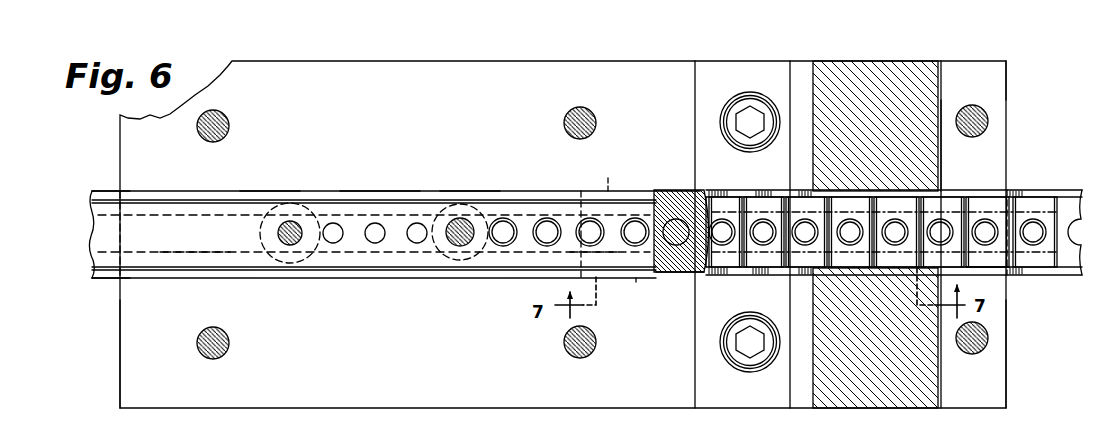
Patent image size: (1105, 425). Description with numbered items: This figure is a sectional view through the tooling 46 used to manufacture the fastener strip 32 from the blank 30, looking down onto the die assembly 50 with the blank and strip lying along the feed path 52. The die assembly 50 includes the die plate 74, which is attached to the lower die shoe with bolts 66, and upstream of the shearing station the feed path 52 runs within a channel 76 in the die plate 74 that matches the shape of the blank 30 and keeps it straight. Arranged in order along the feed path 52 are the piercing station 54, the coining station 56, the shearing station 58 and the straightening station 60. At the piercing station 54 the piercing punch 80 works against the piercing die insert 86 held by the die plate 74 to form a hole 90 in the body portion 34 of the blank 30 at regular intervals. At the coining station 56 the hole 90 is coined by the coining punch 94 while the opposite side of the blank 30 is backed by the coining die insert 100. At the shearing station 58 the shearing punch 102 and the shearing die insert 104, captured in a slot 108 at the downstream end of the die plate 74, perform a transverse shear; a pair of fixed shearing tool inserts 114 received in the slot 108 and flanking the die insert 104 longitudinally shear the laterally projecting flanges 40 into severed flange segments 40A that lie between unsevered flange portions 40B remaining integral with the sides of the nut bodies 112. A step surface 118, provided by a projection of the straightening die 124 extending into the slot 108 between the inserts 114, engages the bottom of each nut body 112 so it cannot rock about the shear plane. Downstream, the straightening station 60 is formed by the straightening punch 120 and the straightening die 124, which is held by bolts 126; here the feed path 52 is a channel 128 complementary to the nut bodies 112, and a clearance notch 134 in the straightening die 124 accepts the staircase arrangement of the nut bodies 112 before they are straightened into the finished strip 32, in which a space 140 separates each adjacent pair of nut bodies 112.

The blank 30 is at (84, 212).
The fastener strip 32 is at (1050, 165).
The body portion 34 is at (96, 239).
The laterally projecting flanges 40 is at (100, 190).
The severed flange segments 40A is at (752, 191).
The unsevered flange portions 40B is at (772, 191).
The tooling 46 is at (1045, 63).
The die assembly 50 is at (500, 61).
The feed path 52 is at (381, 192).
The piercing station 54 is at (263, 178).
The coining station 56 is at (474, 178).
The shearing station 58 is at (666, 156).
The straightening station 60 is at (990, 148).
The bolts 66 is at (222, 114).
The die plate 74 is at (120, 383).
The channel 76 is at (196, 249).
The piercing punch 80 is at (289, 222).
The piercing die insert 86 is at (295, 260).
The hole 90 is at (334, 243).
The coining punch 94 is at (458, 219).
The coining die insert 100 is at (455, 261).
The shearing punch 102 is at (661, 195).
The shearing die insert 104 is at (586, 257).
The slot 108 is at (584, 200).
The nut bodies 112 is at (786, 259).
The shearing tool inserts 114 is at (608, 190).
The step surface 118 is at (668, 263).
The straightening punch 120 is at (886, 64).
The straightening die 124 is at (1000, 377).
The bolts 126 is at (752, 98).
The channel 128 is at (1000, 269).
The clearance notch 134 is at (725, 276).
The space 140 is at (1036, 245).